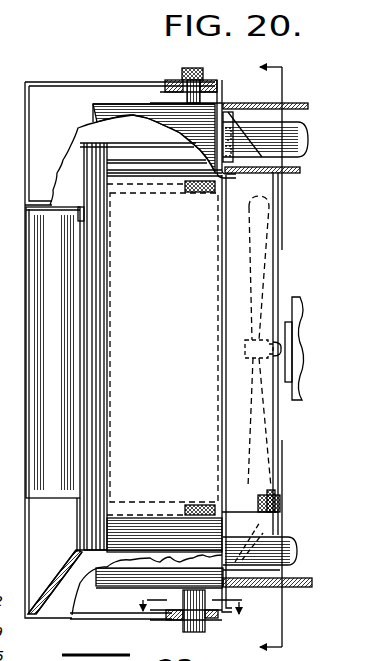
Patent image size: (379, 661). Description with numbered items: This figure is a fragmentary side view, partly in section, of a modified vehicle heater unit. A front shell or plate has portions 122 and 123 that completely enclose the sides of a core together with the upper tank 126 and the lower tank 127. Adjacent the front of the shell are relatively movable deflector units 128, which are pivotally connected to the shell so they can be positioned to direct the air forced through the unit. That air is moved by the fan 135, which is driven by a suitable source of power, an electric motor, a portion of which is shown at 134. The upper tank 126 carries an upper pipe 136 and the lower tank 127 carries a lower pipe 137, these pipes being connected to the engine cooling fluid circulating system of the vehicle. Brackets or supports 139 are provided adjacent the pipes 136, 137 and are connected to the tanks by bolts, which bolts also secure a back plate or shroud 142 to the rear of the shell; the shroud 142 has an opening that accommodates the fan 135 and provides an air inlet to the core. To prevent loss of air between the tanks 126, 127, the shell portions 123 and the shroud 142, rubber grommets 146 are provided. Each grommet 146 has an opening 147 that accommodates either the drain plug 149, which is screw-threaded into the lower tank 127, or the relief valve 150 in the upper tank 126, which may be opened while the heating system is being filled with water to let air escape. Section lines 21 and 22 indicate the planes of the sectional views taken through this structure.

The portion of shell 123 is at (67, 83).
The upper tank 126 is at (122, 104).
The lower tank 127 is at (130, 580).
The deflector unit 128 is at (42, 428).
The portion of shell 122 is at (162, 348).
The electric motor 134 is at (300, 400).
The fan 135 is at (262, 218).
The upper pipe 136 is at (262, 135).
The lower pipe 137 is at (270, 566).
The bracket 139 is at (252, 103).
The back plate 142 is at (270, 516).
The grommet 146 is at (170, 620).
The opening 147 is at (219, 85).
The drain plug 149 is at (195, 632).
The relief valve 150 is at (190, 68).
The section line 21 is at (199, 601).
The section line 22 is at (285, 359).